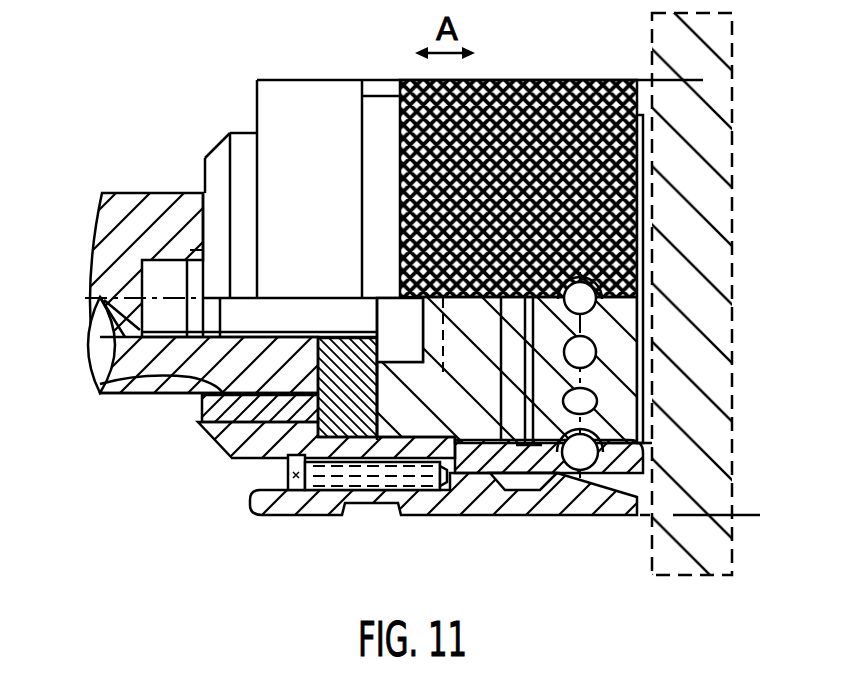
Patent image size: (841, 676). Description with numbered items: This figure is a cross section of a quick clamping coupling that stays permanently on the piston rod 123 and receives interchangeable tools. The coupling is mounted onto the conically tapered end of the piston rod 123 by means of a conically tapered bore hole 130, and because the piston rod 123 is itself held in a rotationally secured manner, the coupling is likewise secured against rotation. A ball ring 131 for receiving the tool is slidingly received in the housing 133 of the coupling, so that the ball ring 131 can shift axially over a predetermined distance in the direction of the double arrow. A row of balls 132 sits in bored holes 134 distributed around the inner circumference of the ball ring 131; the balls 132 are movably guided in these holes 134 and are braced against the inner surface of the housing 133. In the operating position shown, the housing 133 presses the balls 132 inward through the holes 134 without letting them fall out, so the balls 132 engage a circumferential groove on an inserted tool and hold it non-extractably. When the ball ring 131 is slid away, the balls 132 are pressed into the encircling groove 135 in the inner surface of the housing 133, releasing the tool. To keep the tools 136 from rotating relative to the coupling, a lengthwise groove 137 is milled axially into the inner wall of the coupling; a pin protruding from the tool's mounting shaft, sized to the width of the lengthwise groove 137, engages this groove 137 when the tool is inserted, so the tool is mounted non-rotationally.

The piston rod 123 is at (143, 395).
The conically tapered bore hole 130 is at (100, 388).
The ball ring 131 is at (535, 90).
The balls 132 is at (597, 350).
The housing 133 is at (597, 500).
The holes 134 is at (600, 447).
The groove 135 is at (515, 493).
The tools 136 is at (718, 149).
The lengthwise groove 137 is at (645, 294).